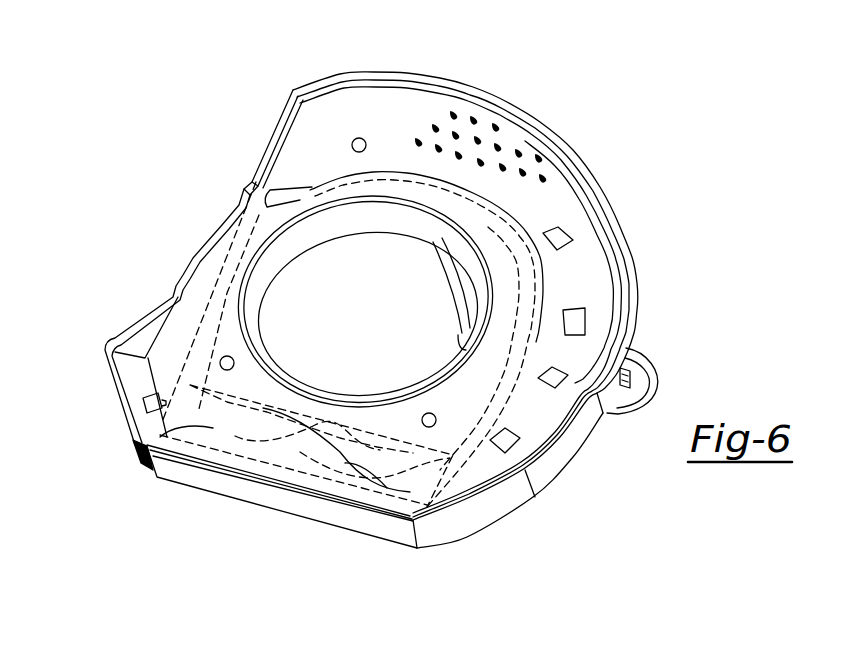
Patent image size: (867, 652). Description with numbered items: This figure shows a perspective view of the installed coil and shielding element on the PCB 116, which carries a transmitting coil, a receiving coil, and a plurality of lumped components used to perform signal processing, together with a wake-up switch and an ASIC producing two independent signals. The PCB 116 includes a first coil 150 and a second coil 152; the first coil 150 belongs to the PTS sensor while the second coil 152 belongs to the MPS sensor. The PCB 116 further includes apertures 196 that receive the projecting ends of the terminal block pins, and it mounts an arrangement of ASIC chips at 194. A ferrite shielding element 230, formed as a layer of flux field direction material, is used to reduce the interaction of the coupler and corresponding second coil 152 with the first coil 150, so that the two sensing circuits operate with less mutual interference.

The PCB 116 is at (397, 112).
The second coil 152 is at (305, 197).
The apertures 196 is at (498, 128).
The arrangement of ASIC chips 194 is at (573, 325).
The first coil 150 is at (140, 447).
The ferrite shielding element 230 is at (345, 463).